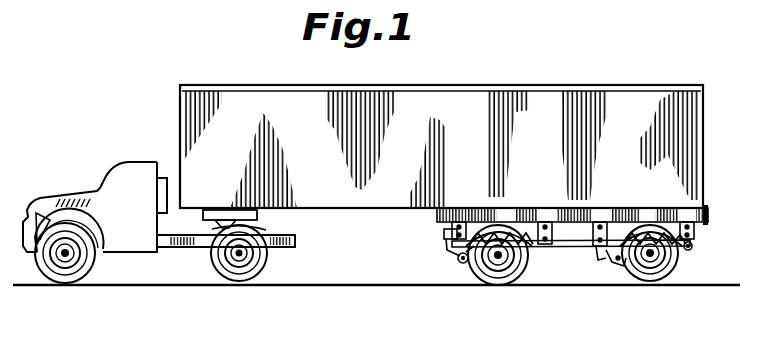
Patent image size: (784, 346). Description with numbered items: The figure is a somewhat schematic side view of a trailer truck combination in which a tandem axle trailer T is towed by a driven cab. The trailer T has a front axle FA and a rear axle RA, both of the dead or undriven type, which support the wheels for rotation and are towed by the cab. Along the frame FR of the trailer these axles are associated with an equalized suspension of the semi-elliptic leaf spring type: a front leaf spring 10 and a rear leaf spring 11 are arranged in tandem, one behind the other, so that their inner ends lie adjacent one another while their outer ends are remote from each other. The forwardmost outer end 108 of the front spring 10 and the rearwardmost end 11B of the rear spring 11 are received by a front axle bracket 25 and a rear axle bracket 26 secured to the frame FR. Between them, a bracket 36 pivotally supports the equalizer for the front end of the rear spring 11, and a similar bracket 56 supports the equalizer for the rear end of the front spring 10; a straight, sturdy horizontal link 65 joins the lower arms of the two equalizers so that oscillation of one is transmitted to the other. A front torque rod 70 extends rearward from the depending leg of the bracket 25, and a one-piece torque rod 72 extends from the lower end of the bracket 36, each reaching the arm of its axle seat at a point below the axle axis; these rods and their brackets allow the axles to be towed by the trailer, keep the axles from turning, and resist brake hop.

The trailer T is at (508, 100).
The frame FR is at (437, 213).
The front axle bracket 25 is at (460, 208).
The front spring 10 is at (486, 228).
The bracket 56 is at (541, 214).
The bracket 36 is at (598, 212).
The rear axle bracket 26 is at (686, 213).
The outer end of front spring 108 is at (450, 234).
The front torque rod 70 is at (460, 259).
The link 65 is at (548, 248).
The torque rod 72 is at (615, 262).
The rear spring 11 is at (690, 248).
The rear end of rear spring 11B is at (692, 238).
The front axle FA is at (497, 260).
The rear axle RA is at (655, 262).